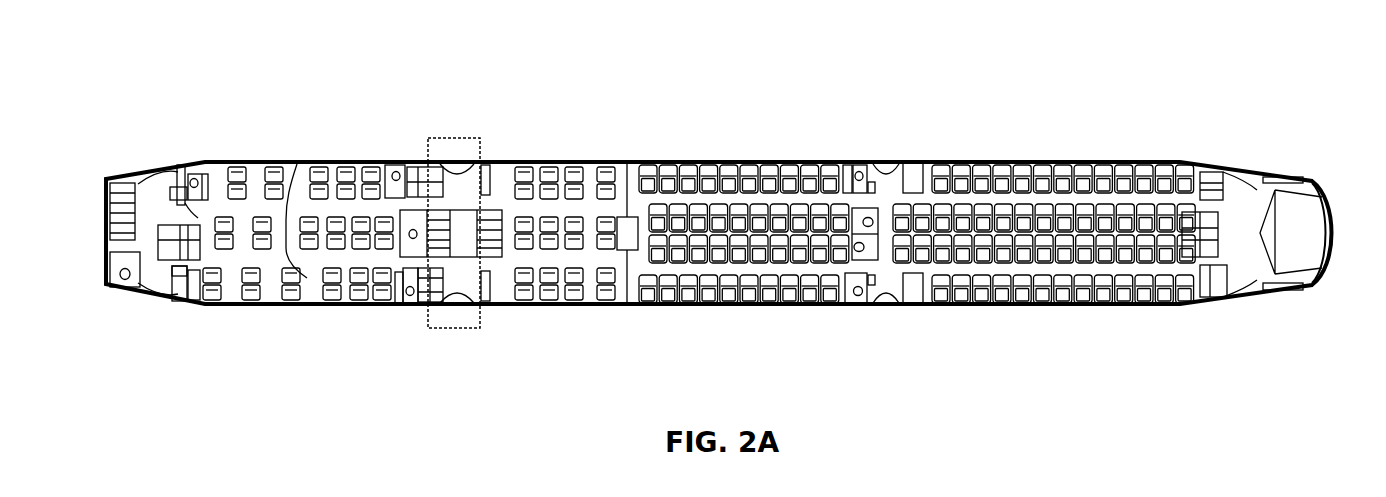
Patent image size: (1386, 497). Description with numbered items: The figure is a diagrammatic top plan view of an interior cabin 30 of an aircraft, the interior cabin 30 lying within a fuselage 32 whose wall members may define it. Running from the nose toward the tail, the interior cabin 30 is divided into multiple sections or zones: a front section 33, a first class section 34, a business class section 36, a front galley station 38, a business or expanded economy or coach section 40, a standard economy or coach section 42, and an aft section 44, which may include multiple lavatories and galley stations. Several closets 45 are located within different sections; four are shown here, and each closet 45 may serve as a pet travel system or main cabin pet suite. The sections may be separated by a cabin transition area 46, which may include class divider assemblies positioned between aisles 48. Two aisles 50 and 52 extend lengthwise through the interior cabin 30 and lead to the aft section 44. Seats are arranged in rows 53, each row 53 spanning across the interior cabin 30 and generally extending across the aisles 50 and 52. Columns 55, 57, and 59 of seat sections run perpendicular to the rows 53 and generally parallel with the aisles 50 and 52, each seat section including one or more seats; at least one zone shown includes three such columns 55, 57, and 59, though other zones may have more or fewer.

The interior cabin 30 is at (245, 66).
The fuselage 32 is at (578, 125).
The front section 33 is at (166, 319).
The first class section 34 is at (258, 303).
The business class section 36 is at (332, 160).
The front galley station 38 is at (453, 322).
The expanded economy or coach section 40 is at (555, 307).
The standard economy or coach section 42 is at (695, 162).
The aft section 44 is at (1252, 188).
The closet 45 is at (197, 292).
The cabin transition area 46 is at (178, 160).
The aisle 48 is at (443, 199).
The aisle 50 is at (1045, 200).
The aisle 52 is at (1063, 270).
The row of seats 53 is at (709, 312).
The column of seat sections 55 is at (645, 283).
The column of seat sections 57 is at (653, 228).
The column of seat sections 59 is at (645, 172).